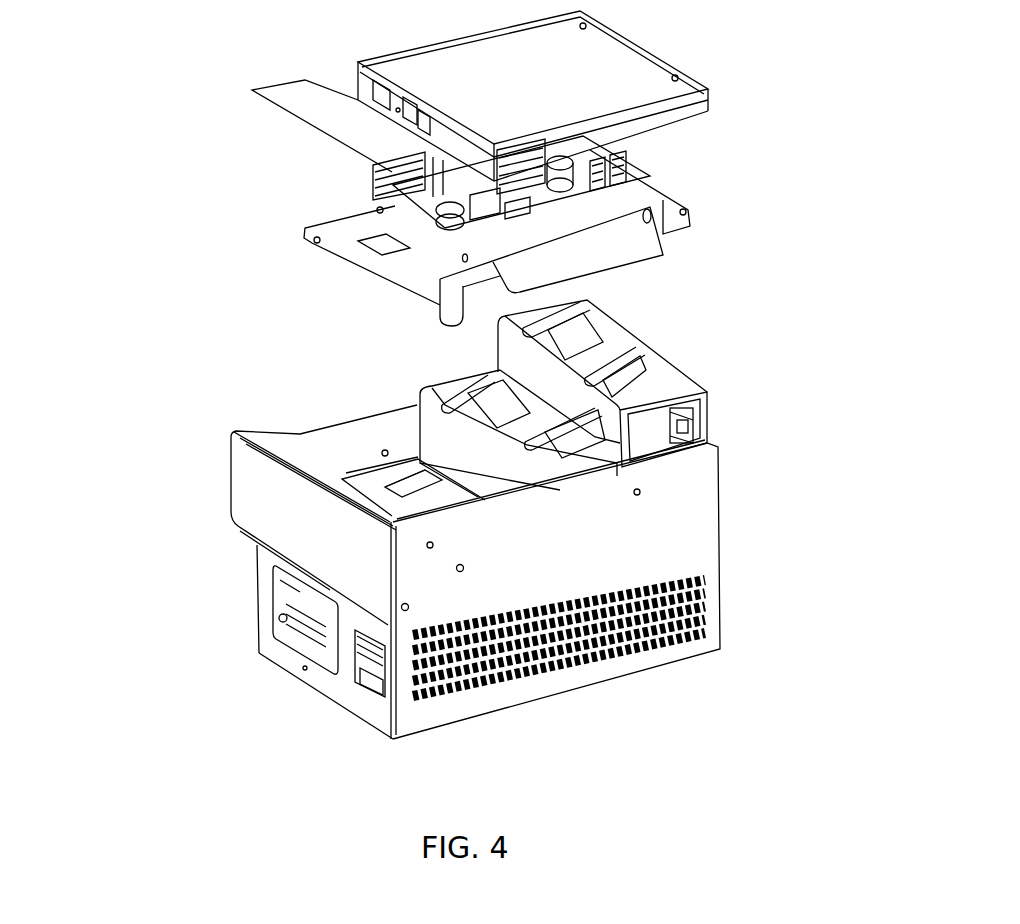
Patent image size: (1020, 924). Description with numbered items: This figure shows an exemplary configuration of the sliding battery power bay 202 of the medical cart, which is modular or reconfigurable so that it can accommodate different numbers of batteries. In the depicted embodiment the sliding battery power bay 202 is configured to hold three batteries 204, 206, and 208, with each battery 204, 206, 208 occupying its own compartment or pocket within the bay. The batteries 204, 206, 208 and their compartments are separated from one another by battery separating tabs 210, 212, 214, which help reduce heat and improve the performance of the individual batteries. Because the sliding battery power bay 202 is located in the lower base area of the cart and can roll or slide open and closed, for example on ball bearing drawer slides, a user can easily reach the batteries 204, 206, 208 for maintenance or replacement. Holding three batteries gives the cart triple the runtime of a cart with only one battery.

The sliding battery power bay 202 is at (196, 598).
The battery 204 is at (422, 492).
The battery 206 is at (557, 447).
The battery 208 is at (610, 357).
The battery separating tab 210 is at (573, 220).
The battery separating tab 212 is at (490, 243).
The battery separating tab 214 is at (383, 252).